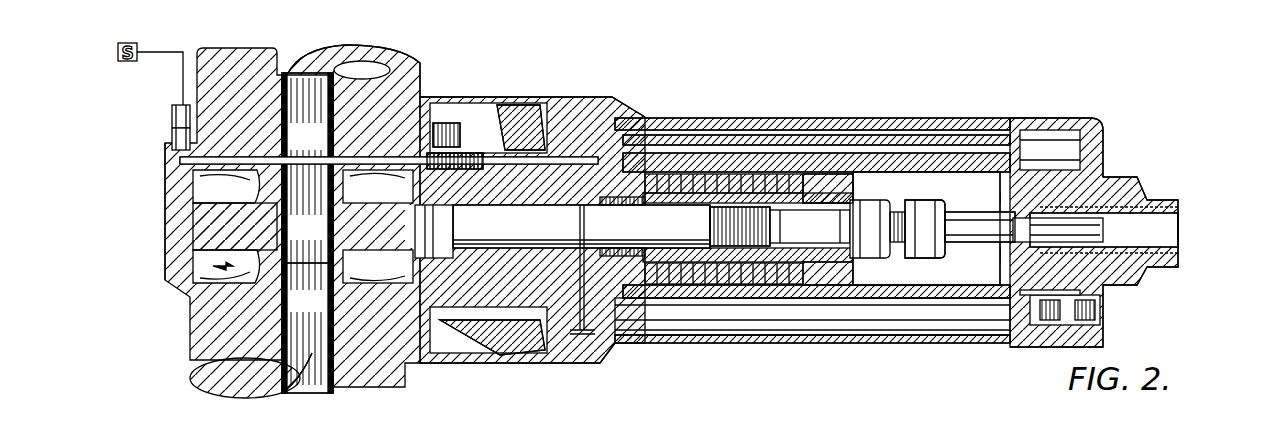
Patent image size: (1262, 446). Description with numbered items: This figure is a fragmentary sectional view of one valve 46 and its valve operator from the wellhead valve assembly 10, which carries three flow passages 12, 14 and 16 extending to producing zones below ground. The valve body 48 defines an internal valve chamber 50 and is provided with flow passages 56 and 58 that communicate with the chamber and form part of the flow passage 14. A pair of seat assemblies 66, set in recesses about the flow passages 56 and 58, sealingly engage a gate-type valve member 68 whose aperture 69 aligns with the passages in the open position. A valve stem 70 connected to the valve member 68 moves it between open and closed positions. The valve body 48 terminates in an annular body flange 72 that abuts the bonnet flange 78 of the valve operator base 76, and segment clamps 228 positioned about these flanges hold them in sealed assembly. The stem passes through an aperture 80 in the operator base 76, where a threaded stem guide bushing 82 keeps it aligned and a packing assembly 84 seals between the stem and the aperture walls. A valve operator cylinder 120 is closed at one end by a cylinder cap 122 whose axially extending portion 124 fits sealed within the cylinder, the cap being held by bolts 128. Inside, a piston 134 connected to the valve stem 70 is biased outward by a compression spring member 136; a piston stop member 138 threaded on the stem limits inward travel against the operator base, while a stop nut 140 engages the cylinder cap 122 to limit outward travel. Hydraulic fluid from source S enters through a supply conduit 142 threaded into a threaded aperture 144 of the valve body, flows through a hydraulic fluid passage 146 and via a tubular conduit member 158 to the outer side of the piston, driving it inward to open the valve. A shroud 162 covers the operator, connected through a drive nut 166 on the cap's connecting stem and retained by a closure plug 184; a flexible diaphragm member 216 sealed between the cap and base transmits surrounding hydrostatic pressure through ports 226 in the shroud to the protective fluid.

The wellhead valve assembly 10 is at (188, 317).
The flow passage 12 is at (217, 387).
The flow passage 14 is at (310, 353).
The flow passage 16 is at (360, 73).
The valve 46 is at (208, 283).
The valve body 48 is at (183, 225).
The valve chamber 50 is at (223, 193).
The flow passage 56 is at (293, 146).
The flow passage 58 is at (293, 311).
The seat assemblies 66 is at (262, 190).
The valve member 68 is at (224, 239).
The aperture 69 is at (293, 239).
The valve stem 70 is at (660, 233).
The body flange 72 is at (465, 140).
The valve operator base 76 is at (577, 140).
The bonnet flange 78 is at (490, 143).
The aperture 80 is at (566, 197).
The stem guide bushing 82 is at (636, 200).
The packing assembly 84 is at (557, 263).
The valve operator cylinder 120 is at (707, 167).
The cylinder cap 122 is at (1023, 147).
The axially extending portion 124 is at (993, 190).
The bolts 128 is at (920, 312).
The piston 134 is at (832, 193).
The compression spring member 136 is at (778, 177).
The piston stop member 138 is at (767, 253).
The stop nut 140 is at (920, 250).
The supply conduit 142 is at (172, 112).
The threaded aperture 144 is at (172, 134).
The hydraulic fluid passage 146 is at (405, 160).
The tubular conduit member 158 is at (942, 140).
The shroud 162 is at (613, 117).
The drive nut 166 is at (1152, 182).
The closure plug 184 is at (1167, 240).
The flexible diaphragm member 216 is at (887, 340).
The ports 226 is at (807, 343).
The segment clamps 228 is at (487, 327).